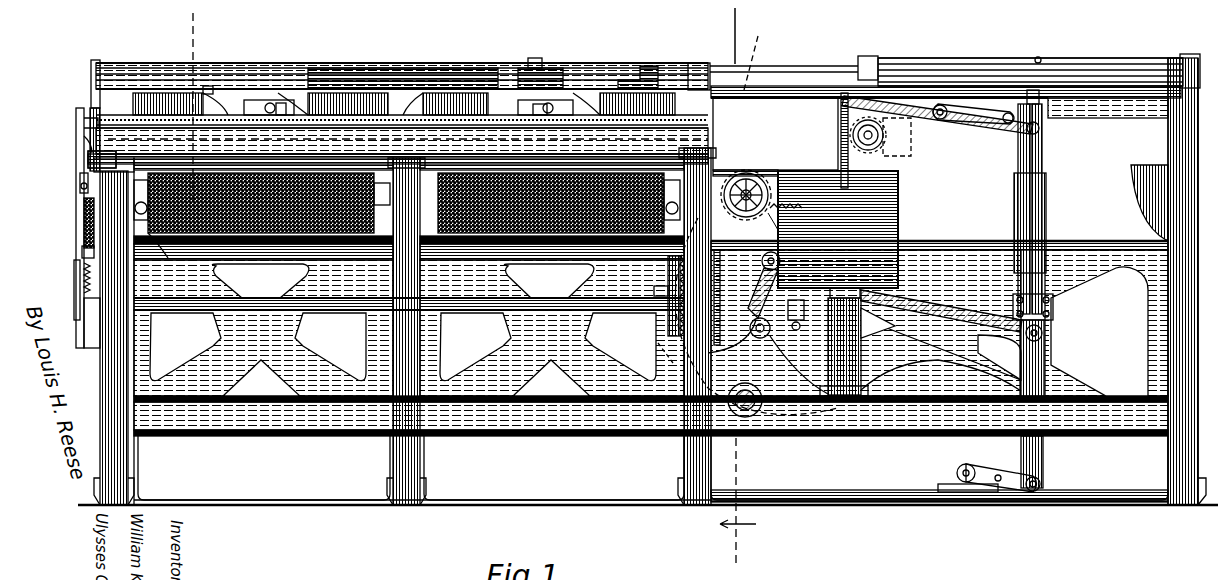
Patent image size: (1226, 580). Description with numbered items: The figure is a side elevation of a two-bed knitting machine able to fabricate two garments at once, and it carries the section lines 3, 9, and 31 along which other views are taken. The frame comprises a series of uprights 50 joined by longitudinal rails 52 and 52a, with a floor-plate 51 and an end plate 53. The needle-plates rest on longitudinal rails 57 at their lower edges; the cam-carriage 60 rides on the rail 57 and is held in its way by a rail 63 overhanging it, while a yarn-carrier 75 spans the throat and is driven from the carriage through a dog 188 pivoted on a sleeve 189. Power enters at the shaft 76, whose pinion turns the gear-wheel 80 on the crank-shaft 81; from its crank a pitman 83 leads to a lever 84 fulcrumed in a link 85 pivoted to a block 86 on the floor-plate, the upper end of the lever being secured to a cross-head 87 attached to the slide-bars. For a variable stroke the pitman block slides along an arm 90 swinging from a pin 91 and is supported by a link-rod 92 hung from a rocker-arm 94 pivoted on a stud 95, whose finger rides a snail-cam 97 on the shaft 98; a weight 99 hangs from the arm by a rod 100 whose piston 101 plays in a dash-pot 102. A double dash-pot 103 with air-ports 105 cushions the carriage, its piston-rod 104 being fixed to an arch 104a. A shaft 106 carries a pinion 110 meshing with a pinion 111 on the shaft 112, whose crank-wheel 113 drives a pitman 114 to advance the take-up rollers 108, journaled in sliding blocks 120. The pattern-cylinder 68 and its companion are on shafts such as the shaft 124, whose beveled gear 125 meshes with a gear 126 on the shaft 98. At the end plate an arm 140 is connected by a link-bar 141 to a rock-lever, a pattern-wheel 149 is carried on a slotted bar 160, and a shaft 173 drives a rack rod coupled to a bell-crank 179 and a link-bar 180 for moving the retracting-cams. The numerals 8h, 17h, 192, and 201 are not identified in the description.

The section line 3 3 is at (474, 296).
The gear 8h is at (760, 255).
The section line 9 9 is at (560, 248).
The rack 17h is at (430, 90).
The section line 31 31 is at (167, 191).
The uprights 50 is at (412, 465).
The floor-plate 51 is at (870, 498).
The longitudinal rails 52 is at (651, 448).
The longitudinal rail 52a is at (1102, 233).
The end plate 53 is at (120, 457).
The longitudinal rails 57 is at (402, 141).
The cam-carriage 60 is at (300, 86).
The rail 63 is at (660, 116).
The pattern-cylinder 68 is at (358, 237).
The yarn-carrier 75 is at (540, 52).
The shaft 76 is at (716, 180).
The gear-wheel 80 is at (700, 300).
The crank-shaft 81 is at (770, 330).
The pitman 83 is at (915, 293).
The lever 84 is at (1036, 340).
The link 85 is at (992, 462).
The block 86 is at (950, 462).
The cross-head 87 is at (1062, 90).
The arm 90 is at (1010, 150).
The pin 91 is at (1032, 108).
The link-rod 92 is at (1036, 165).
The rocker-arm 94 is at (955, 108).
The stud 95 is at (935, 100).
The snail-cam 97 is at (812, 140).
The shaft 98 is at (868, 135).
The weight 99 is at (890, 200).
The rod 100 is at (771, 158).
The piston 101 is at (865, 312).
The dash-pot 102 is at (878, 366).
The double dash-pot 103 is at (1130, 52).
The piston-rod 104 is at (806, 58).
The arch 104a is at (645, 58).
The air-ports 105 is at (1032, 50).
The shaft 106 is at (409, 338).
The take-up rollers 108 is at (409, 195).
The pinion 110 is at (660, 302).
The pinion 111 is at (660, 256).
The shaft 112 is at (646, 281).
The crank-wheel 113 is at (650, 336).
The pitman 114 is at (768, 323).
The blocks 120 is at (658, 178).
The shaft 124 is at (762, 49).
The beveled gear 125 is at (900, 80).
The beveled gear 126 is at (860, 48).
The arm 140 is at (176, 254).
The link-bar 141 is at (72, 166).
The pattern-wheel 149 is at (68, 276).
The bar 160 is at (82, 318).
The shaft 173 is at (200, 80).
The bell-crank 179 is at (68, 120).
The link-bar 180 is at (76, 234).
The dog 188 is at (522, 60).
The sleeve 189 is at (396, 60).
The top beam 192 is at (399, 72).
The shaft 201 is at (738, 178).